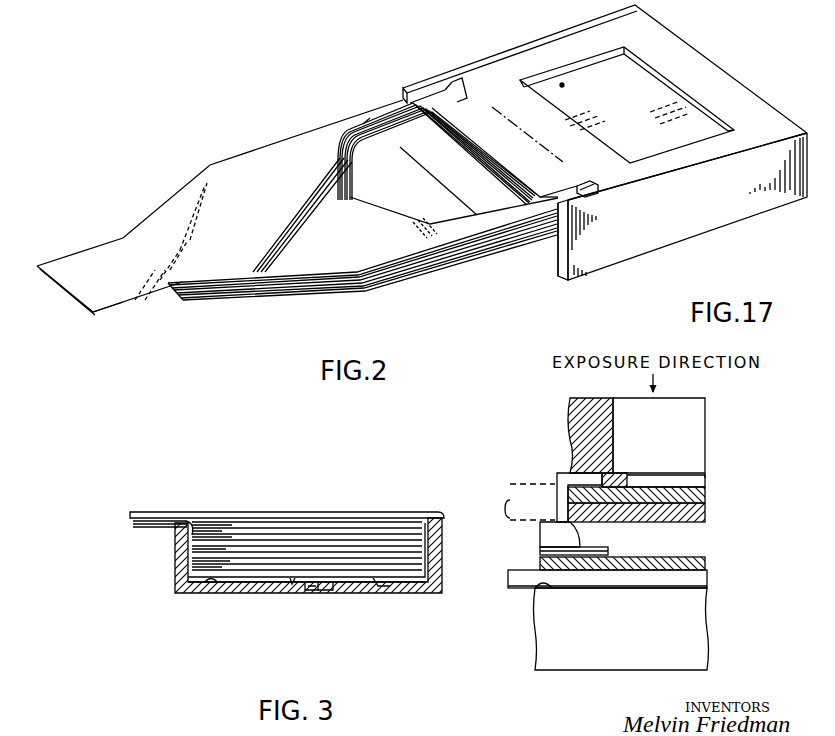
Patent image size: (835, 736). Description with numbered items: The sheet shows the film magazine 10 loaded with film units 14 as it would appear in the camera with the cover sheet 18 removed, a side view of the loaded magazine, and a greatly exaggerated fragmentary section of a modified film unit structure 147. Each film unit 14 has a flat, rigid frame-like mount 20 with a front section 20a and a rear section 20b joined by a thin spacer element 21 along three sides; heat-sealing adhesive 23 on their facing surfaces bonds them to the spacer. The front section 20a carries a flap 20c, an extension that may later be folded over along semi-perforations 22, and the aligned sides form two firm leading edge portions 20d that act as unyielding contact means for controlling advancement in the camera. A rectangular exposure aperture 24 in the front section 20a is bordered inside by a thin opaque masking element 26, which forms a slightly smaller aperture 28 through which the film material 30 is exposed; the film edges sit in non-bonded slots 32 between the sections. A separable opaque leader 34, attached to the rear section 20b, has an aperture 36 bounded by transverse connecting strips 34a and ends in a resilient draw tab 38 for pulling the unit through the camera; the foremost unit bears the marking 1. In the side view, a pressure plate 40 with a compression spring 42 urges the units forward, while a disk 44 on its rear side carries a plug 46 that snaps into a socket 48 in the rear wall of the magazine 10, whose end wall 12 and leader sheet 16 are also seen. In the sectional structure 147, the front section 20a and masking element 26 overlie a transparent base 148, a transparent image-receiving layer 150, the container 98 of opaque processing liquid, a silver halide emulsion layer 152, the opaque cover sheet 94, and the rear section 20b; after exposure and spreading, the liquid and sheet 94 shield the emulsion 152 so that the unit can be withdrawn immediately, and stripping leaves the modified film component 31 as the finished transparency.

In FIG. 17, the film unit number marking 1 is at (88, 283).
In FIG. 17, the magazine 10 is at (702, 212).
In FIG. 3, the magazine 10 is at (442, 548).
In FIG. 17, the pack end wall 12 is at (557, 233).
In FIG. 17, the film unit 14 is at (456, 268).
In FIG. 3, the film unit 14 is at (414, 557).
In FIG. 3, the leader sheet 16 is at (158, 530).
In FIG. 3, the cover sheet 18 is at (158, 513).
In FIG. 17, the mount 20 is at (740, 87).
In FIG. 17, the front section 20a is at (596, 197).
In FIG. 2, the front section 20a is at (623, 436).
In FIG. 17, the rear section 20b is at (584, 182).
In FIG. 2, the rear section 20b is at (707, 632).
In FIG. 17, the flap 20c is at (458, 100).
In FIG. 17, the leading edge portions 20d is at (599, 198).
In FIG. 2, the spacer element 21 is at (557, 474).
In FIG. 17, the semi-perforations 22 is at (492, 107).
In FIG. 2, the heat-sealing adhesive 23 is at (690, 473).
In FIG. 17, the exposure aperture 24 is at (573, 66).
In FIG. 17, the masking element 26 is at (684, 90).
In FIG. 2, the masking element 26 is at (708, 482).
In FIG. 17, the aperture 28 is at (616, 66).
In FIG. 2, the aperture 28 is at (653, 477).
In FIG. 17, the film material 30 is at (641, 125).
In FIG. 2, the modified film component 31 is at (518, 502).
In FIG. 17, the slots 32 is at (563, 87).
In FIG. 17, the leader 34 is at (251, 216).
In FIG. 17, the transverse connecting strips 34a is at (363, 124).
In FIG. 17, the aperture 36 is at (380, 207).
In FIG. 17, the draw tab 38 is at (120, 301).
In FIG. 3, the pressure plate 40 is at (377, 582).
In FIG. 3, the compression spring 42 is at (208, 582).
In FIG. 3, the disk 44 is at (332, 588).
In FIG. 3, the plug 46 is at (315, 590).
In FIG. 3, the socket 48 is at (307, 590).
In FIG. 2, the cover sheet 94 is at (707, 582).
In FIG. 2, the container 98 is at (545, 535).
In FIG. 2, the film unit structure 147 is at (726, 450).
In FIG. 2, the transparent base 148 is at (707, 497).
In FIG. 2, the transparent image-receiving layer 150 is at (707, 515).
In FIG. 2, the silver halide emulsion layer 152 is at (707, 567).